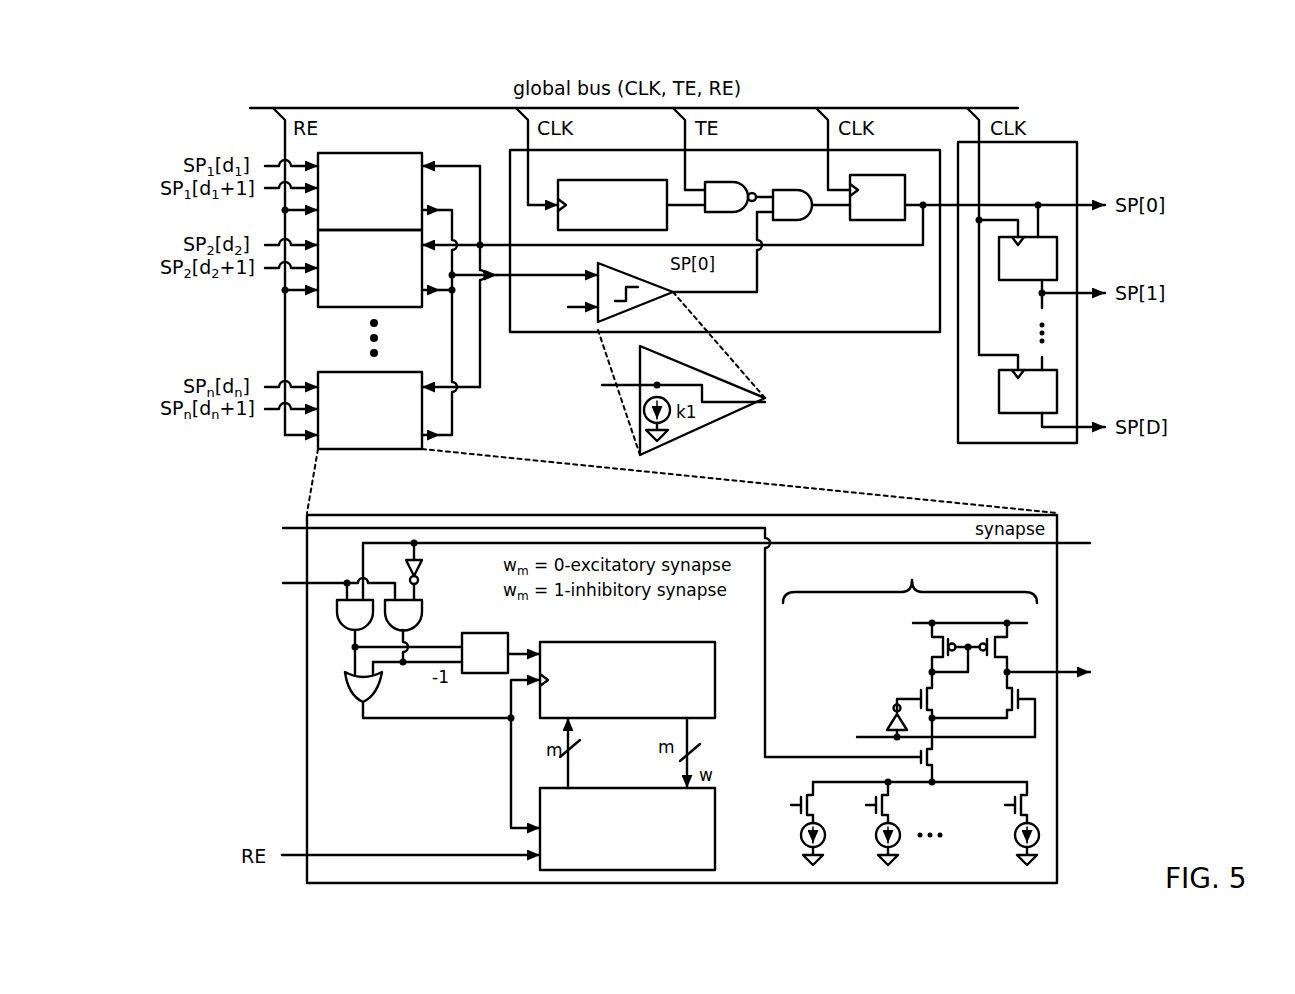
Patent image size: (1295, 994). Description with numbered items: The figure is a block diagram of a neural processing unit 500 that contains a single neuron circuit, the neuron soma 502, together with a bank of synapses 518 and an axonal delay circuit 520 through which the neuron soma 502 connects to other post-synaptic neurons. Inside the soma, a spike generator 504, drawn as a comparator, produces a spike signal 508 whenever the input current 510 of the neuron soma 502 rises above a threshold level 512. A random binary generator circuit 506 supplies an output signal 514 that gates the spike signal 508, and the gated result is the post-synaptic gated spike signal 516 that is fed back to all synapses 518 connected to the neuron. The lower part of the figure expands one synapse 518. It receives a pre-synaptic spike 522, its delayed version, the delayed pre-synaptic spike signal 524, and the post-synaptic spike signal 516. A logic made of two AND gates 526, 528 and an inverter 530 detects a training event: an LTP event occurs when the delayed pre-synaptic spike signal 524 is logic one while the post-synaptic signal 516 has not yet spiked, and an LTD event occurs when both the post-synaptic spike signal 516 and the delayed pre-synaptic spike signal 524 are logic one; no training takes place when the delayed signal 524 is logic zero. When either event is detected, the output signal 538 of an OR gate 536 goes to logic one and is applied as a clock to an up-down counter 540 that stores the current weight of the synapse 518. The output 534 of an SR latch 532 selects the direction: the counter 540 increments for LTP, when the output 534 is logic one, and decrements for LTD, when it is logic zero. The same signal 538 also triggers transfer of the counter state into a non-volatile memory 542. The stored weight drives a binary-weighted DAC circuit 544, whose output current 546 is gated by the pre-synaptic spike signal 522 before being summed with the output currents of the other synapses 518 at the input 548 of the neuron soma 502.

The neural processing unit 500 is at (1200, 125).
The neuron soma 502 is at (872, 333).
The spike generator 504 is at (673, 293).
The random binary generator circuit 506 is at (604, 180).
The spike signal 508 is at (757, 266).
The input current 510 is at (497, 281).
The threshold level 512 is at (578, 311).
The output signal of the random binary generator 514 is at (689, 207).
The post-synaptic gated spike signal 516 is at (866, 248).
The synapse 518 is at (378, 153).
The axonal delay circuit 520 is at (1078, 153).
The pre-synaptic spike 522 is at (288, 526).
The delayed pre-synaptic spike signal 524 is at (289, 586).
The first AND gate 526 is at (340, 623).
The second AND gate 528 is at (422, 611).
The inverter 530 is at (426, 568).
The SR latch 532 is at (500, 677).
The output of the SR latch 534 is at (516, 651).
The OR gate 536 is at (385, 691).
The output signal of the OR gate 538 is at (416, 721).
The up-down counter 540 is at (676, 642).
The non-volatile memory 542 is at (590, 788).
The binary-weighted DAC circuit 544 is at (970, 568).
The output current of the DAC 546 is at (455, 435).
The input of the neuron 548 is at (533, 282).